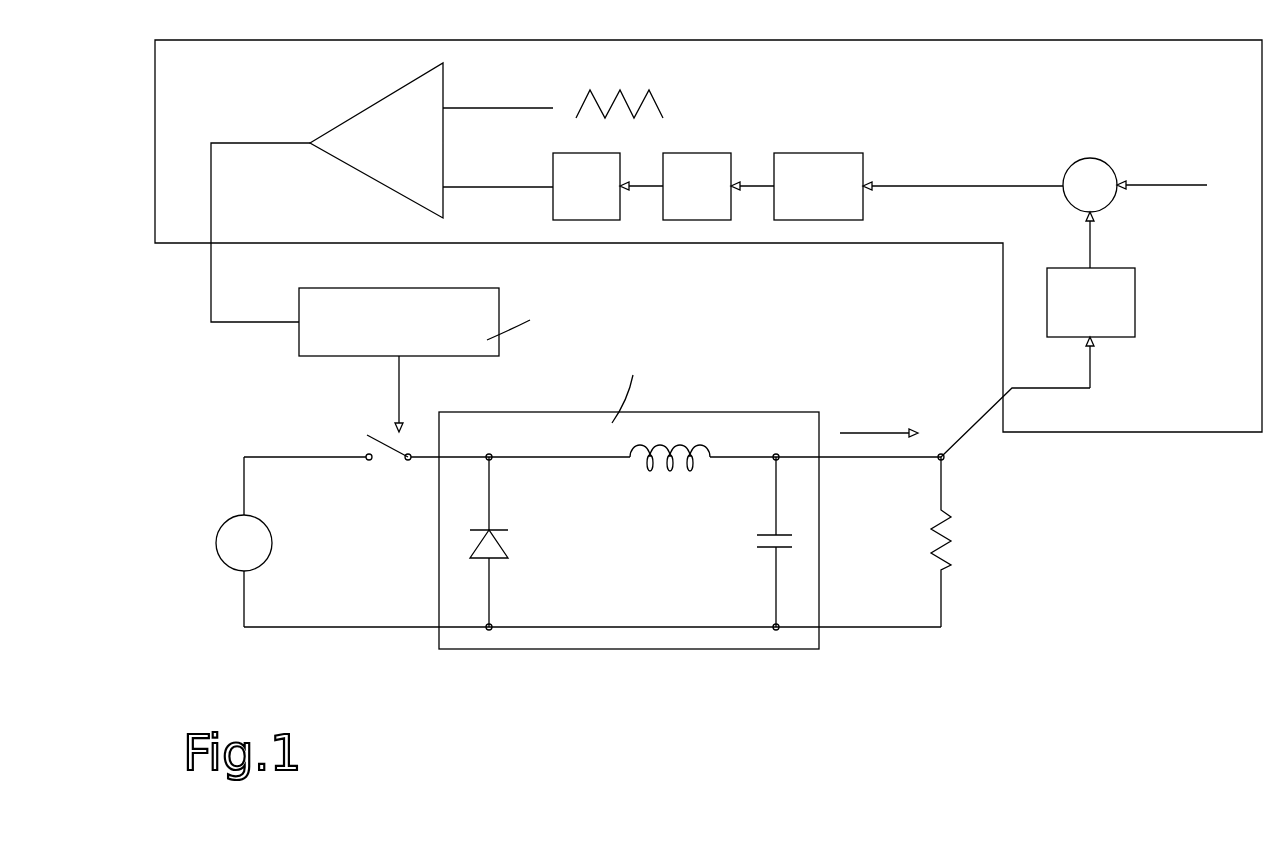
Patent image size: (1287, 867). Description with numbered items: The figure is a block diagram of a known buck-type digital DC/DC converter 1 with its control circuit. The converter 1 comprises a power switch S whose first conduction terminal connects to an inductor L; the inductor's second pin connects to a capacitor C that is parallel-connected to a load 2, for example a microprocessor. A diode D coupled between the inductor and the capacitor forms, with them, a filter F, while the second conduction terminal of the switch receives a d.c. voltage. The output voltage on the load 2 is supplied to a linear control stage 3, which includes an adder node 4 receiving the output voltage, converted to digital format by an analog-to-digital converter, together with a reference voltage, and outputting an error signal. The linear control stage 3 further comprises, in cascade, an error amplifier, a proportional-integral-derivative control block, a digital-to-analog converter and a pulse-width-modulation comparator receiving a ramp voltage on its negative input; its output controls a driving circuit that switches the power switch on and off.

The converter 1 is at (691, 482).
The load 2 is at (933, 537).
The linear control stage 3 is at (708, 229).
The adder node 4 is at (1077, 167).